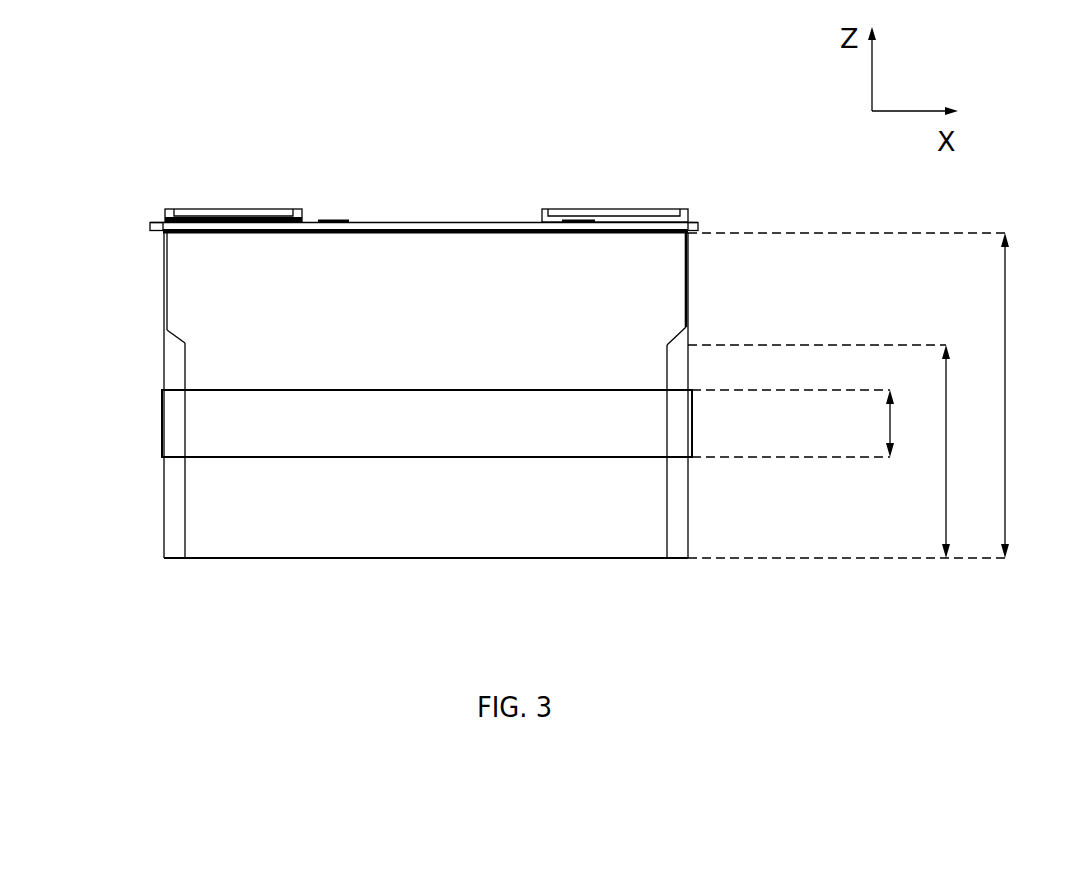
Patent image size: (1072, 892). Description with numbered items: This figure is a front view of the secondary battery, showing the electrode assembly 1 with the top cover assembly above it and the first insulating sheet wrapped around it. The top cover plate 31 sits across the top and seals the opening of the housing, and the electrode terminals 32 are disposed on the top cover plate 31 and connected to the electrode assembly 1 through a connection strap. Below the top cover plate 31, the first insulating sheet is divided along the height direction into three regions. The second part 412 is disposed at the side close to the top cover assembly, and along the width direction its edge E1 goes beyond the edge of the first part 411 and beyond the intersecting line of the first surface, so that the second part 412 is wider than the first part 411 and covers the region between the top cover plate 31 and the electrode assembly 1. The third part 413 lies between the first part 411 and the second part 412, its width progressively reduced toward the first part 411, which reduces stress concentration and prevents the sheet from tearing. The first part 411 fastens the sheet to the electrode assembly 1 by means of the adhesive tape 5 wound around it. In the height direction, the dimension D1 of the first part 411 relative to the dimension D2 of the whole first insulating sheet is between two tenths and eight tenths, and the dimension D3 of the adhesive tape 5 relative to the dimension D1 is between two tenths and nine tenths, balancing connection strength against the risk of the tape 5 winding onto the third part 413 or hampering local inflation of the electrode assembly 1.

The electrode assembly 1 is at (380, 431).
The adhesive tape 5 is at (378, 440).
The top cover plate 31 is at (425, 222).
The electrode terminal 32 is at (233, 208).
The first part 411 is at (520, 530).
The second part 412 is at (185, 300).
The third part 413 is at (183, 337).
The edge of the second part E1 is at (688, 283).
The dimension of the first part D1 is at (934, 451).
The dimension of the first insulating sheet D2 is at (993, 395).
The dimension of the adhesive tape D3 is at (874, 423).